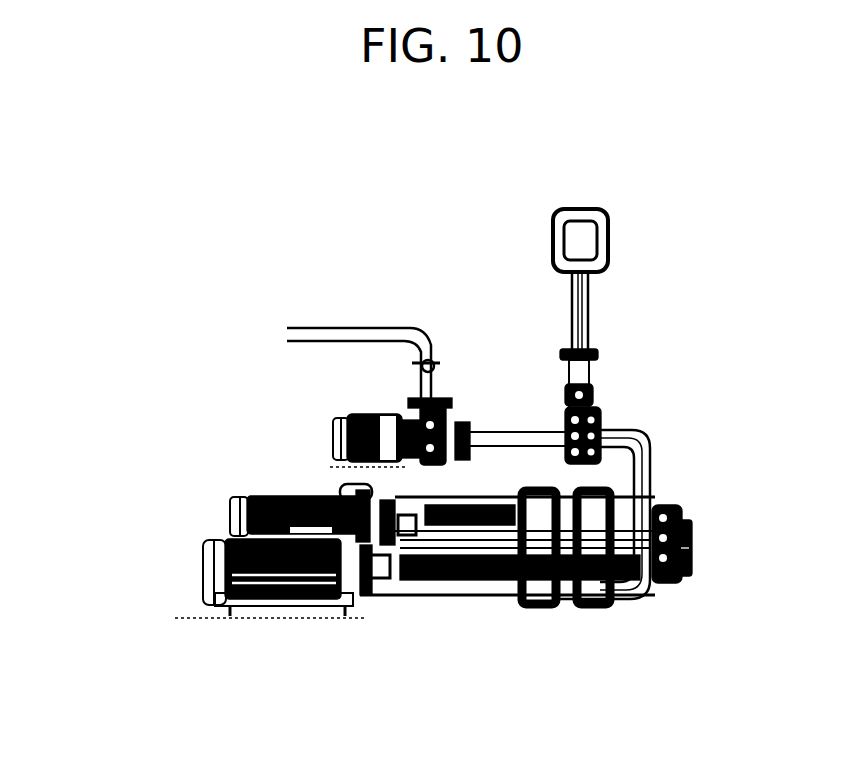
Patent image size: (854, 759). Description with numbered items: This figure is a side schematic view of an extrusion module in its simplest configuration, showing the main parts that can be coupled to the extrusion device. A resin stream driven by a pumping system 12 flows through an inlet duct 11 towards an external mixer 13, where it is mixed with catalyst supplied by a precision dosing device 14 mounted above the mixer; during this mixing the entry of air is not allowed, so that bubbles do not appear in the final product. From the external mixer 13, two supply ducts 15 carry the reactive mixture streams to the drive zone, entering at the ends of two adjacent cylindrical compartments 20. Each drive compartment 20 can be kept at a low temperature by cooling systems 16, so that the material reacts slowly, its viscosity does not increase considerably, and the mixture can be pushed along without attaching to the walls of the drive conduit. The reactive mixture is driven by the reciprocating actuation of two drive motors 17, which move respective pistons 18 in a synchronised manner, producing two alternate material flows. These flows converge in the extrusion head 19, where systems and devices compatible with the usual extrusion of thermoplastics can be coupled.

The inlet duct 11 is at (380, 326).
The pumping system 12 is at (325, 445).
The external mixer 13 is at (553, 405).
The precision dosing device 14 is at (580, 200).
The supply ducts 15 is at (633, 420).
The cooling systems 16 is at (572, 617).
The drive motors 17 is at (228, 520).
The pistons 18 is at (460, 548).
The extrusion head 19 is at (670, 515).
The cylindrical compartments 20 is at (500, 600).